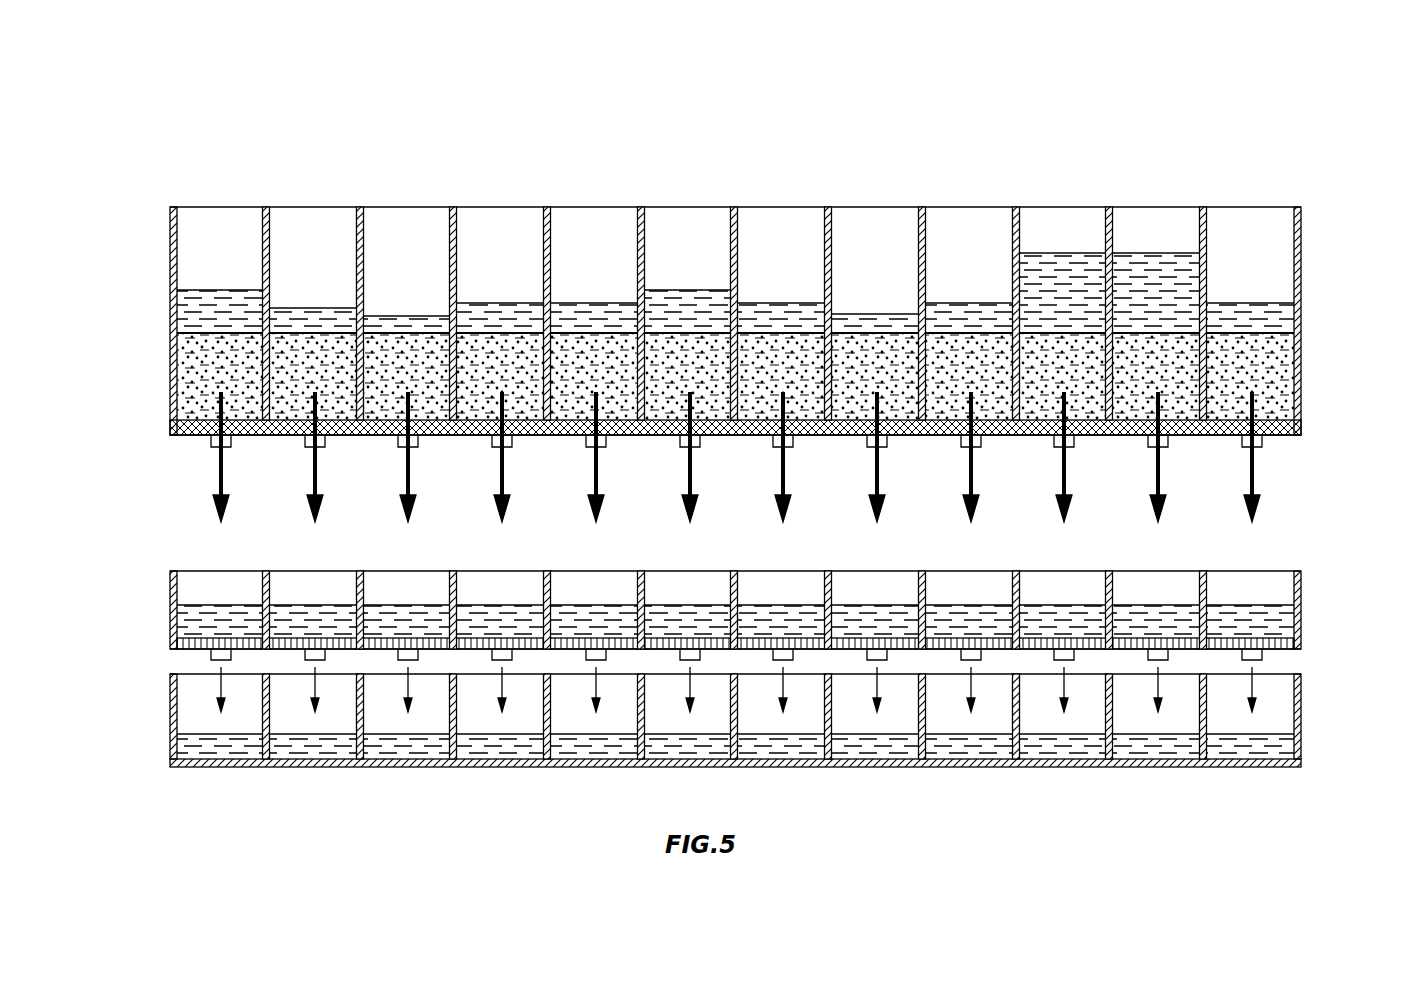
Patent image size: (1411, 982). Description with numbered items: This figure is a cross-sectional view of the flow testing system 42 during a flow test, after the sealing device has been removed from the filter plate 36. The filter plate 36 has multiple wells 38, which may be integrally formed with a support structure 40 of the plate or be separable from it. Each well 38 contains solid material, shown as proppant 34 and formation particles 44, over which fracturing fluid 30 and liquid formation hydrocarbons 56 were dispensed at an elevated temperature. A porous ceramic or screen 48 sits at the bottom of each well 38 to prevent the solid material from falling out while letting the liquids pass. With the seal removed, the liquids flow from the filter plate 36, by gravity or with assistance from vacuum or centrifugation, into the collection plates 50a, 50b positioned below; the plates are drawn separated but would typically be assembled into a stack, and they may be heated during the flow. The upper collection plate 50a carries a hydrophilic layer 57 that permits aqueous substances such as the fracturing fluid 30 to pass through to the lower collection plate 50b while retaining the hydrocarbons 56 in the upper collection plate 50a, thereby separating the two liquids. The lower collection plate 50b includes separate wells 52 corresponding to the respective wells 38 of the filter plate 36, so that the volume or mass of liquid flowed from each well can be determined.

The flow testing system 42 is at (1302, 120).
The filter plate 36 is at (691, 287).
The wells 38 is at (219, 215).
The support structure 40 is at (170, 222).
The formation hydrocarbons 56 is at (185, 300).
The proppant 34 is at (741, 374).
The formation particles 44 is at (190, 348).
The porous ceramic or screen 48 is at (175, 428).
The fracturing fluid 30 is at (215, 452).
The upper collection plate 50a is at (735, 607).
The hydrophilic layer 57 is at (185, 645).
The wells 52 is at (190, 718).
The lower collection plate 50b is at (735, 752).